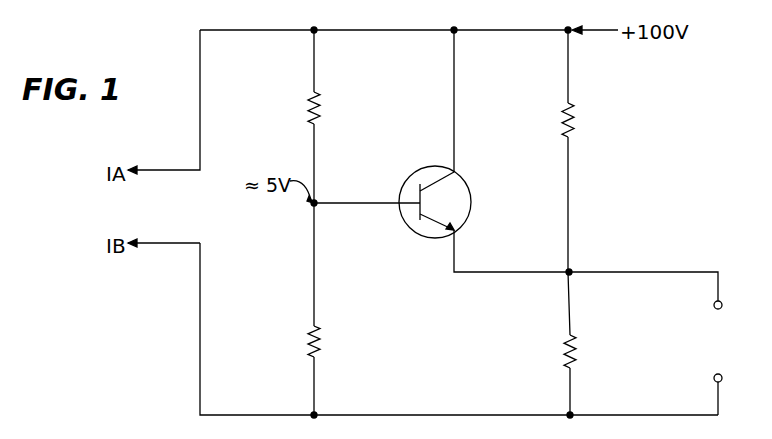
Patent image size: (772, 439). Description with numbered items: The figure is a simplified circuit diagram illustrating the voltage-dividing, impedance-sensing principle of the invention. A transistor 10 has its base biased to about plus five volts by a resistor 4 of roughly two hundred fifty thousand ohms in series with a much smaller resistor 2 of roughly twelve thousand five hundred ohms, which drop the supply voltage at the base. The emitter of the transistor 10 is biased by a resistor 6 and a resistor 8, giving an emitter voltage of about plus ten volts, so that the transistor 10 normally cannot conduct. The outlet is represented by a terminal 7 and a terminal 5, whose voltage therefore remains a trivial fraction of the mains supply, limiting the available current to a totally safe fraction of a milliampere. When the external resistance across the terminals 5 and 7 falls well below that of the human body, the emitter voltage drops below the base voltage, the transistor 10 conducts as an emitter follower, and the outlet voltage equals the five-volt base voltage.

The resistor 2 is at (320, 355).
The resistor 4 is at (324, 104).
The terminal 5 is at (722, 374).
The resistor 6 is at (576, 114).
The terminal 7 is at (722, 301).
The resistor 8 is at (578, 357).
The transistor 10 is at (401, 197).